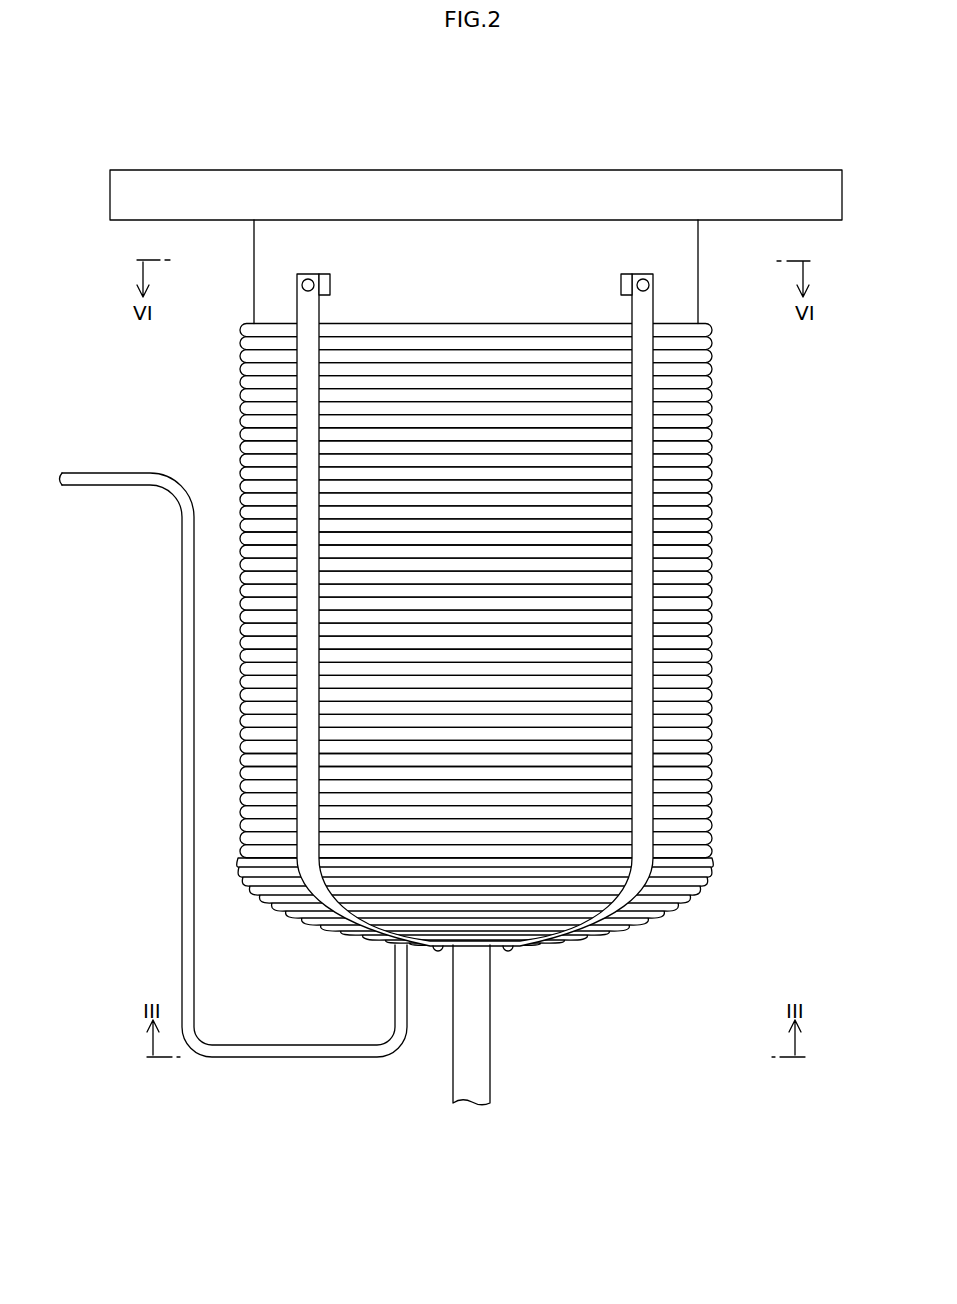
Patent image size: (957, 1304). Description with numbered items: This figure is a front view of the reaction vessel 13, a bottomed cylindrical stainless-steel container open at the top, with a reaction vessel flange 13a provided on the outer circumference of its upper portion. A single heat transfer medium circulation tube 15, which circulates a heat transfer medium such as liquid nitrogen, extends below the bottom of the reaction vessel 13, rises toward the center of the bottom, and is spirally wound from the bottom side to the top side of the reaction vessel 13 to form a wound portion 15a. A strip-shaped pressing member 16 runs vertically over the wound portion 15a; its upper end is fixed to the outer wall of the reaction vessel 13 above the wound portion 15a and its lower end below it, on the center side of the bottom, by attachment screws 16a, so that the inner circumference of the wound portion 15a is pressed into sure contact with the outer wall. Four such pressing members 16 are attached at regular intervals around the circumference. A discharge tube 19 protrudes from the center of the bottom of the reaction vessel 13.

The reaction vessel 13 is at (714, 287).
The reaction vessel flange 13a is at (572, 176).
The heat transfer medium circulation tube 15 is at (168, 735).
The wound portion 15a is at (698, 680).
The pressing member 16 is at (302, 398).
The attachment screw 16a is at (308, 279).
The discharge tube 19 is at (483, 1048).